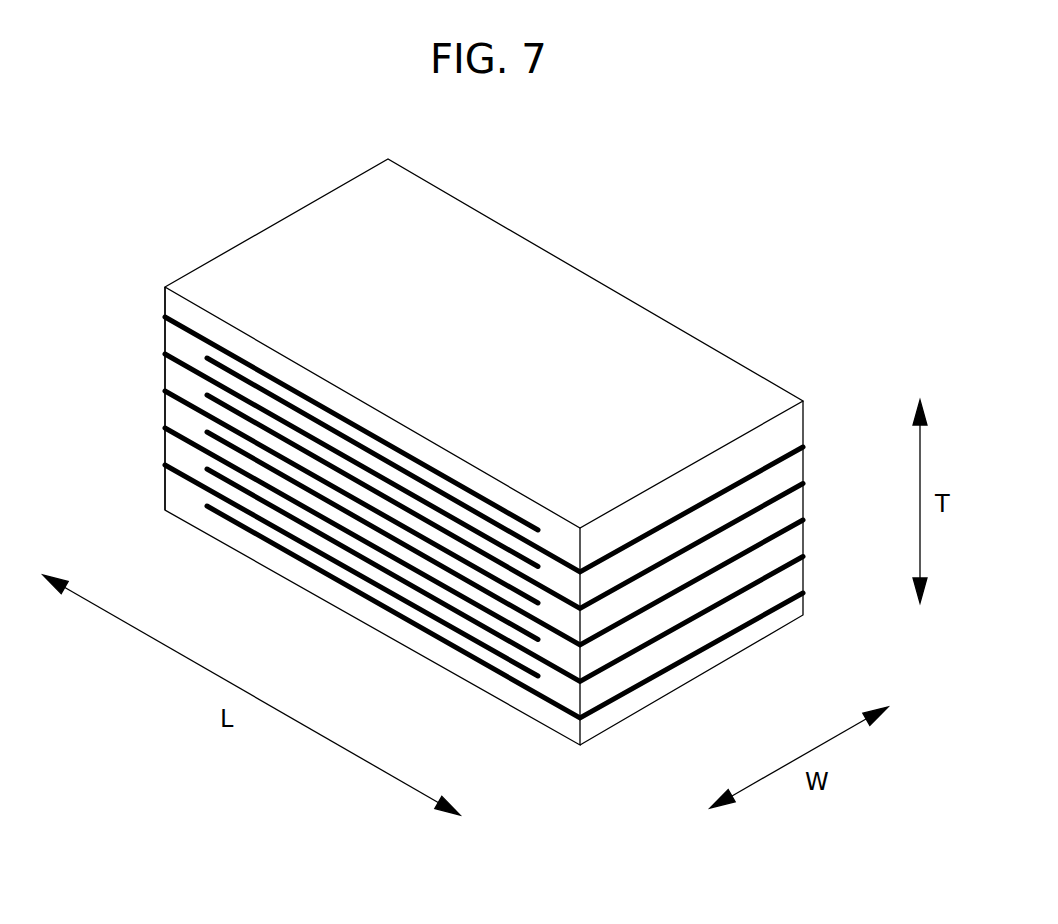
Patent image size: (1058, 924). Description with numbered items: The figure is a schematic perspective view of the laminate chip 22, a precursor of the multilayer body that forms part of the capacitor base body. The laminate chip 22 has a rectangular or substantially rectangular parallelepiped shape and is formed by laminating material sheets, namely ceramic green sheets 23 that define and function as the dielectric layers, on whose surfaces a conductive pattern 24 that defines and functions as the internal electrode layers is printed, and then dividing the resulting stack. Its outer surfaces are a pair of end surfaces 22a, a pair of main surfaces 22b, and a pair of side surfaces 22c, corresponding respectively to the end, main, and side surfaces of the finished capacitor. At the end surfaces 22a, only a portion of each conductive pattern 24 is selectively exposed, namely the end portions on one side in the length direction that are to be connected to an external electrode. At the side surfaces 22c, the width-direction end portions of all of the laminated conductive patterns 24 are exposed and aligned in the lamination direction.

The laminate chip 22 is at (513, 444).
The end surfaces 22a is at (309, 251).
The main surfaces 22b is at (483, 244).
The side surfaces 22c is at (660, 360).
The ceramic green sheets 23 is at (712, 615).
The conductive pattern 24 is at (643, 647).